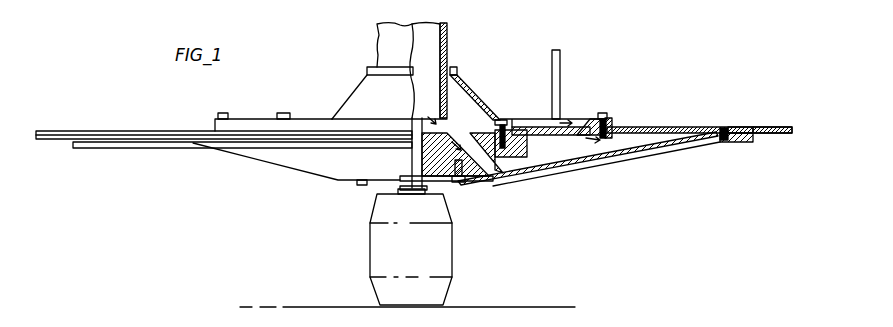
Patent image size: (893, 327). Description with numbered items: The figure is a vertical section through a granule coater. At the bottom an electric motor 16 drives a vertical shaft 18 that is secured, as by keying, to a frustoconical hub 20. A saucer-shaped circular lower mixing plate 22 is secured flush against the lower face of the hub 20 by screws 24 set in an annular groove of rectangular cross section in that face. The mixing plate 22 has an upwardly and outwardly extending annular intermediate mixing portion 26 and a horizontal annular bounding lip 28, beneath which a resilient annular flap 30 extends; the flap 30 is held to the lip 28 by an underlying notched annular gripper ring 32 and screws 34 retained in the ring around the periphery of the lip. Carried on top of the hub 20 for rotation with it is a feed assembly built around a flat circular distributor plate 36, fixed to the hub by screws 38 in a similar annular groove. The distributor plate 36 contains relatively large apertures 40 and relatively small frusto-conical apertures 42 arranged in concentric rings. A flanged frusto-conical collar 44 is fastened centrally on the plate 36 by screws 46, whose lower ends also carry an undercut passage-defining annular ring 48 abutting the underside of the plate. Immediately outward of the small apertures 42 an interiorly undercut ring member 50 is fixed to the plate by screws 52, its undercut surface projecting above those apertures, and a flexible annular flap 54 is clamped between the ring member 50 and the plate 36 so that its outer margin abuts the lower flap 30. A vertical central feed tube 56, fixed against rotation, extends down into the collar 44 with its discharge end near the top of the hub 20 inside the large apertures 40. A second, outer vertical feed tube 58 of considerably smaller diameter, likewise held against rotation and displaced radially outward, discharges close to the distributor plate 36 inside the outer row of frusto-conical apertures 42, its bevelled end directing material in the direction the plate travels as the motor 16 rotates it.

The electric motor 16 is at (447, 250).
The vertical shaft 18 is at (395, 188).
The hub 20 is at (480, 172).
The lower mixing plate 22 is at (257, 165).
The screws 24 is at (357, 185).
The intermediate mixing portion 26 is at (565, 163).
The bounding lip 28 is at (722, 130).
The resilient annular flap 30 is at (782, 134).
The gripper ring 32 is at (723, 141).
The screws 34 is at (731, 132).
The distributor plate 36 is at (530, 128).
The screws 38 is at (425, 116).
The large apertures 40 is at (474, 119).
The frusto-conical apertures 42 is at (603, 152).
The flanged frusto-conical collar 44 is at (358, 95).
The screws 46 is at (504, 120).
The annular ring 48 is at (523, 147).
The ring member 50 is at (583, 119).
The screws 52 is at (605, 113).
The flexible annular flap 54 is at (640, 127).
The central feed tube 56 is at (447, 43).
The outer feed tube 58 is at (562, 62).